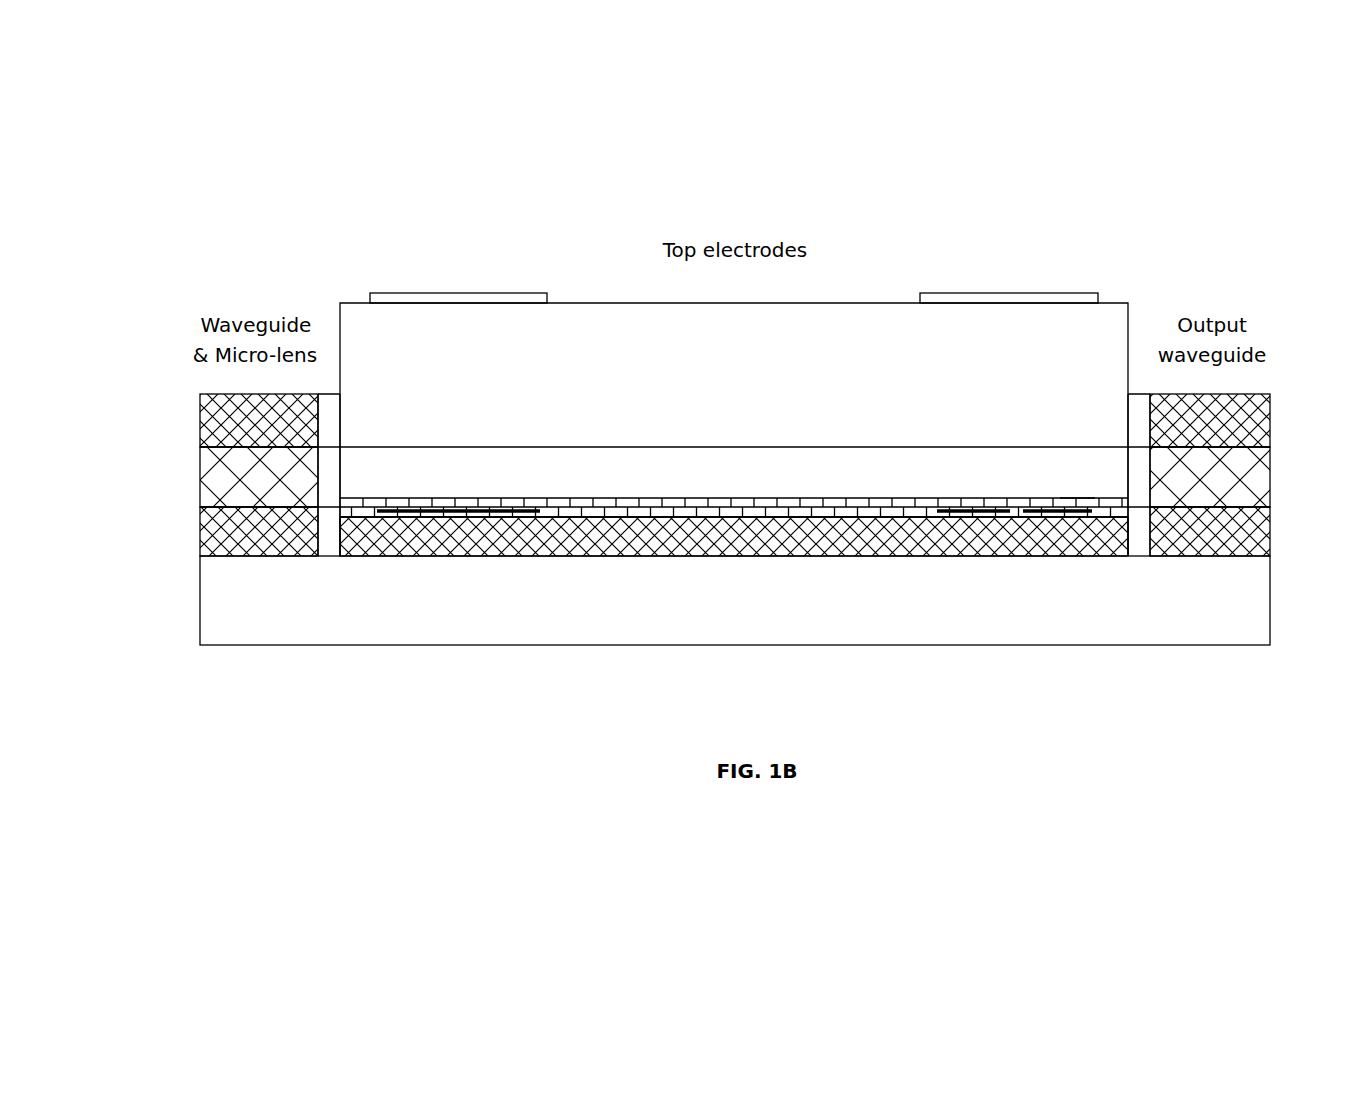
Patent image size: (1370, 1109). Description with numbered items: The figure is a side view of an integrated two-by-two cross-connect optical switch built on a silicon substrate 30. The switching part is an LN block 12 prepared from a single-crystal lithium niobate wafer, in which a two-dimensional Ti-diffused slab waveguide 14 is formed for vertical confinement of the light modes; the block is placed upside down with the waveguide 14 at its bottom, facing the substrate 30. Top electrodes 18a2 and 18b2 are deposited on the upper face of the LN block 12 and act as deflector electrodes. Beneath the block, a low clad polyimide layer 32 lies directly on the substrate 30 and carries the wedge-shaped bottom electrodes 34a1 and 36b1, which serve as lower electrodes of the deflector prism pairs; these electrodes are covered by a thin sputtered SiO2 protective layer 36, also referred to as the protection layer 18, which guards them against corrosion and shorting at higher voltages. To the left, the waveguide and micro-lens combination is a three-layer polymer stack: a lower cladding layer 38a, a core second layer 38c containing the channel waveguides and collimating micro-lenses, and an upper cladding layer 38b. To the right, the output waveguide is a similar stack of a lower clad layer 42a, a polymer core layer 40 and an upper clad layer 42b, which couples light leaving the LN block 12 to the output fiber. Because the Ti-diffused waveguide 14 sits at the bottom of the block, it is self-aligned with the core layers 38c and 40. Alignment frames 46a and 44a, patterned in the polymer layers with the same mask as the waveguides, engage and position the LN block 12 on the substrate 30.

The LN block 12 is at (360, 327).
The Ti-diffused waveguide 14 is at (985, 455).
The bottom electrode protection layer 18 is at (1077, 493).
The top electrode 18a2 is at (592, 236).
The top electrode 18b2 is at (868, 236).
The substrate 30 is at (862, 630).
The low clad polymer layer 32 is at (484, 560).
The bottom electrode 34a1 is at (448, 503).
The thin protective layer 36 is at (872, 518).
The bottom electrode 36b1 is at (1035, 499).
The lower cladding layer 38a is at (200, 545).
The upper cladding layer 38b is at (200, 418).
The second layer 38c is at (199, 487).
The polymer core layer 40 is at (1272, 472).
The lower clad polymer layer 42a is at (1273, 528).
The upper clad polymer layer 42b is at (1272, 412).
The alignment frame 44a is at (1140, 392).
The alignment frame 46a is at (327, 393).